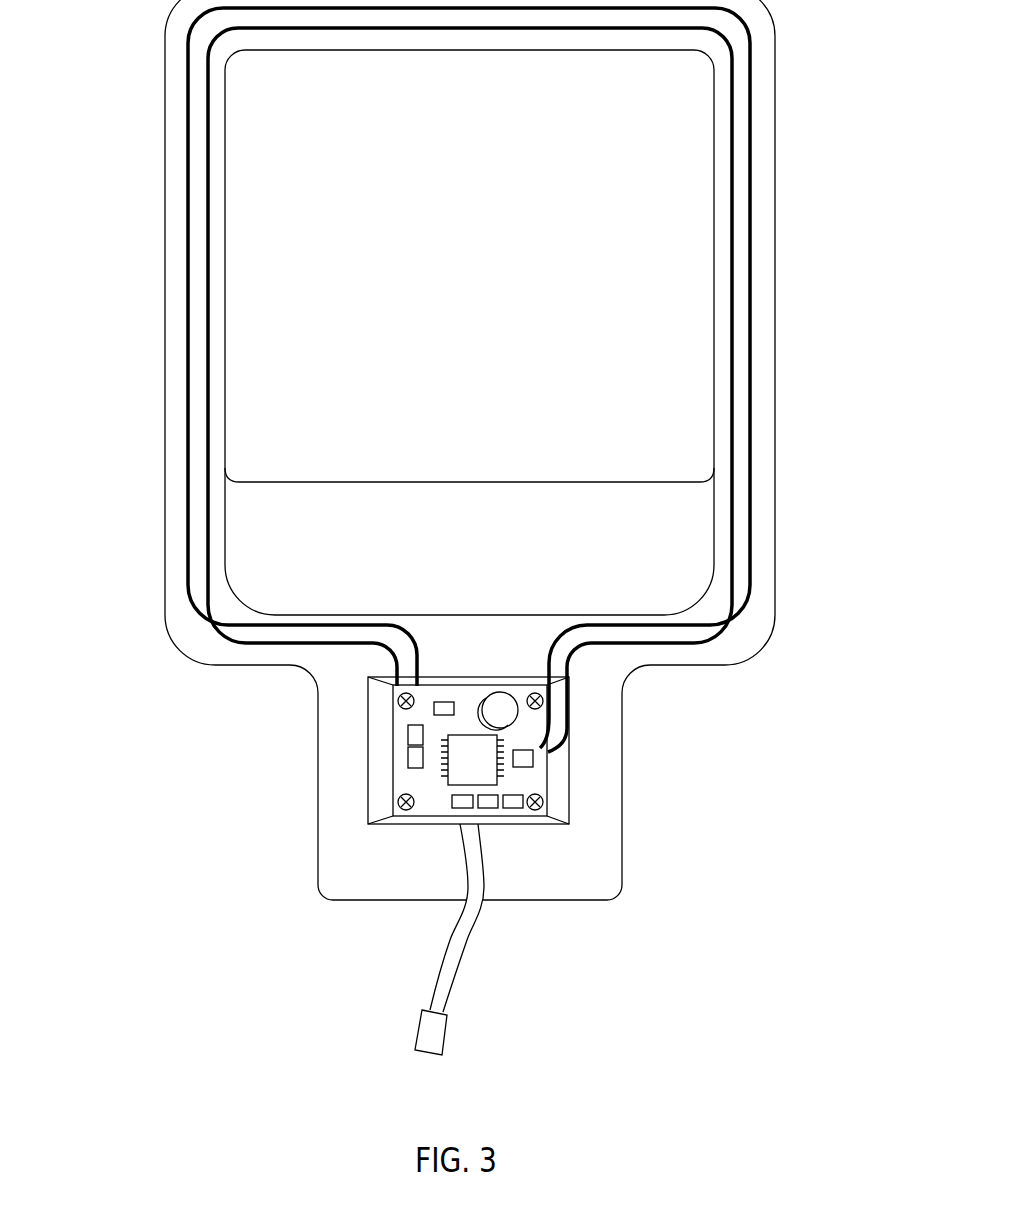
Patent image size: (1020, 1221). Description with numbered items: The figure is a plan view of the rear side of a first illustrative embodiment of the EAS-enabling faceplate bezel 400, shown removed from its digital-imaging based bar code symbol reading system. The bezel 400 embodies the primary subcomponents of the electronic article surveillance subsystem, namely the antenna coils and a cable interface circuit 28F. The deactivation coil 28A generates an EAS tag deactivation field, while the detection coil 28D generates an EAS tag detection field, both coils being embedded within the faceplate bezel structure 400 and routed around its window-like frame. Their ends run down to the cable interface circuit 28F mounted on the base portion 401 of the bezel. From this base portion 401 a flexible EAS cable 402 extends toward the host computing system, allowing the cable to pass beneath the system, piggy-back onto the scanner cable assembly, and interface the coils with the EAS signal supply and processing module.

The EAS-enabling faceplate bezel 400 is at (163, 374).
The base portion of the EAS-enabling faceplate bezel 401 is at (316, 785).
The deactivation coil 28A is at (735, 422).
The detection coil 28D is at (755, 508).
The cable interface circuit 28F is at (563, 780).
The flexible EAS cable 402 is at (450, 980).